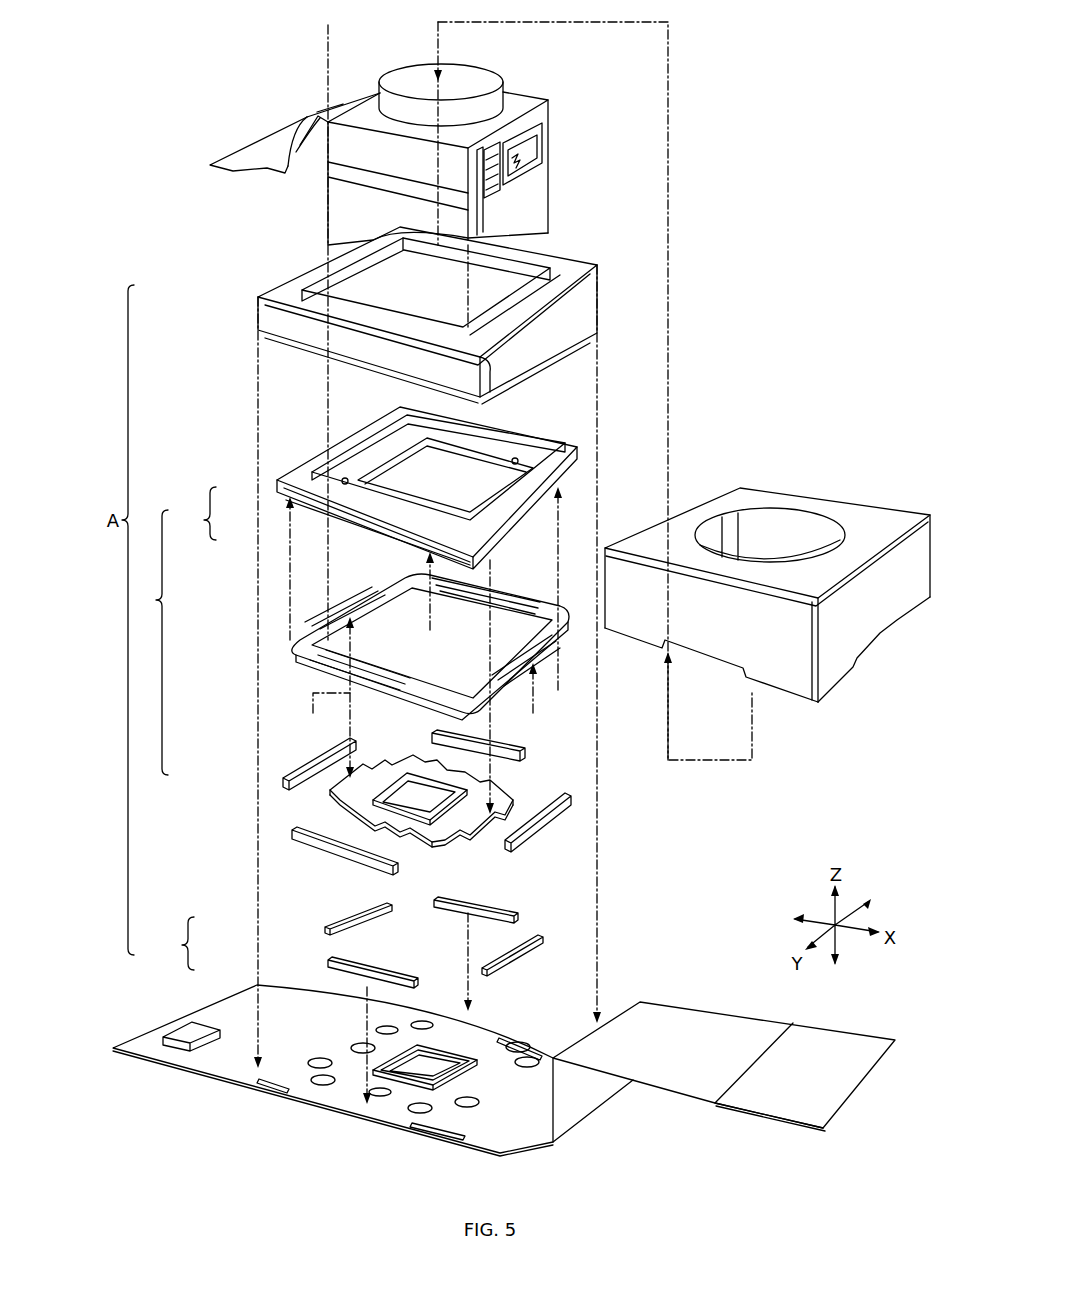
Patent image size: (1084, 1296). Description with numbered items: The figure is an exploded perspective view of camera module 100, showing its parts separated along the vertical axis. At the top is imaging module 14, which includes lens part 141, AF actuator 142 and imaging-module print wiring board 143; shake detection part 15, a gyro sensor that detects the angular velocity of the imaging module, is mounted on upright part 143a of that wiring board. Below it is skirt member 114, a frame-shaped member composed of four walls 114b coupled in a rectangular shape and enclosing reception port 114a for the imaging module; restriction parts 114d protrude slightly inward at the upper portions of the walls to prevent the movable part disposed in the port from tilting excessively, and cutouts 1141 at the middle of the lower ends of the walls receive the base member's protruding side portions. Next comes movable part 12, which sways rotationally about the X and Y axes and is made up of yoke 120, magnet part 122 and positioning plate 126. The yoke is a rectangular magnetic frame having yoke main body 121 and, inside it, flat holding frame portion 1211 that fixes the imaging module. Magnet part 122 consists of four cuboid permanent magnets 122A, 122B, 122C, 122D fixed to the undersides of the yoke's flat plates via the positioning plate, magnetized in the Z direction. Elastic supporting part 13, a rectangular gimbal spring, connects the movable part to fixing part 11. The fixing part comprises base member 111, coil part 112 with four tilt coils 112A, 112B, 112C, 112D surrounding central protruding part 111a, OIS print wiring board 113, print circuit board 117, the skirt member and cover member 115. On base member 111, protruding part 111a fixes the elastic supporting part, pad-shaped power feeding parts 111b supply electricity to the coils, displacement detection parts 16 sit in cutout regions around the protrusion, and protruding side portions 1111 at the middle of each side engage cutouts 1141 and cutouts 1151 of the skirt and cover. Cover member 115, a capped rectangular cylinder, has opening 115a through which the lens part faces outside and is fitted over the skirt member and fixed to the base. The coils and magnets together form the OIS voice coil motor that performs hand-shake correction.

The camera module 100 is at (246, 72).
The imaging module 14 is at (415, 139).
The lens part 141 is at (397, 80).
The AF actuator 142 is at (352, 105).
The imaging-module print wiring board 143 is at (258, 150).
The upright part 143a is at (545, 125).
The shake detection part 15 is at (540, 143).
The skirt member 114 is at (400, 302).
The reception port 114a is at (500, 288).
The wall 114b is at (302, 338).
The restriction part 114d is at (546, 299).
The cutout 1141 is at (378, 376).
The movable part 12 is at (359, 641).
The yoke 120 is at (371, 488).
The yoke main body 121 is at (283, 487).
The holding frame portion 1211 is at (386, 497).
The positioning plate 126 is at (294, 651).
The magnet part 122 is at (379, 791).
The permanent magnet 122A is at (563, 795).
The permanent magnet 122B is at (438, 730).
The permanent magnet 122C is at (303, 757).
The permanent magnet 122D is at (297, 821).
The elastic supporting part 13 is at (320, 810).
The fixing part 11 is at (373, 1008).
The coil part 112 is at (388, 917).
The tilt coil 112A is at (536, 940).
The tilt coil 112B is at (470, 893).
The tilt coil 112C is at (337, 915).
The tilt coil 112D is at (400, 962).
The base member 111 is at (373, 1057).
The protruding part 111a is at (425, 1060).
The power feeding part 111b is at (472, 1106).
The protruding side portion 1111 is at (541, 1034).
The displacement detection part 16 is at (362, 1048).
The print circuit board 117 is at (226, 1060).
The OIS print wiring board 113 is at (700, 1033).
The cover member 115 is at (767, 564).
The opening 115a is at (805, 520).
The cutout 1151 is at (702, 657).